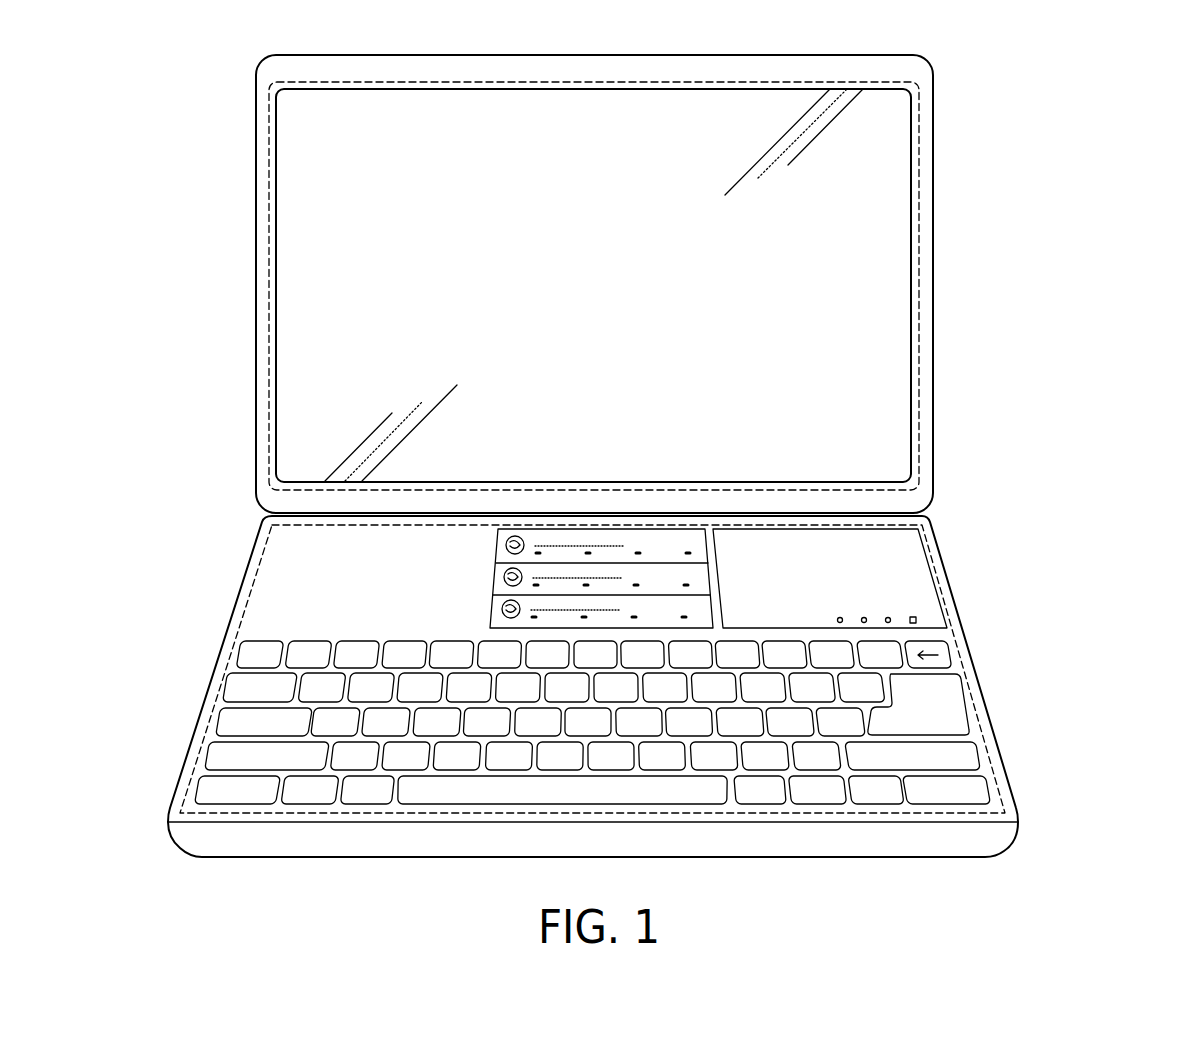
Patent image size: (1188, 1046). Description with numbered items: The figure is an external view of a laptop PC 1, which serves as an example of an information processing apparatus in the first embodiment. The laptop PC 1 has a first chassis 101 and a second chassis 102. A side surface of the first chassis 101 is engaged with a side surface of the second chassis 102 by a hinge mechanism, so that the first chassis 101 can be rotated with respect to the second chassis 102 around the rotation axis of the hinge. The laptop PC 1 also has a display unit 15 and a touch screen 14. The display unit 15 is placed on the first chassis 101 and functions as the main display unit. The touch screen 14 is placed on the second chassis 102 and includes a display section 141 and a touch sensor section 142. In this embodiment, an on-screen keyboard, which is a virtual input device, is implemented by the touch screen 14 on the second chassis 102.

The laptop PC 1 is at (1031, 138).
The first chassis 101 is at (934, 325).
The second chassis 102 is at (722, 856).
The display unit 15 is at (920, 197).
The touch screen 14 is at (962, 636).
The display section 141 is at (593, 722).
The touch sensor section 142 is at (718, 578).